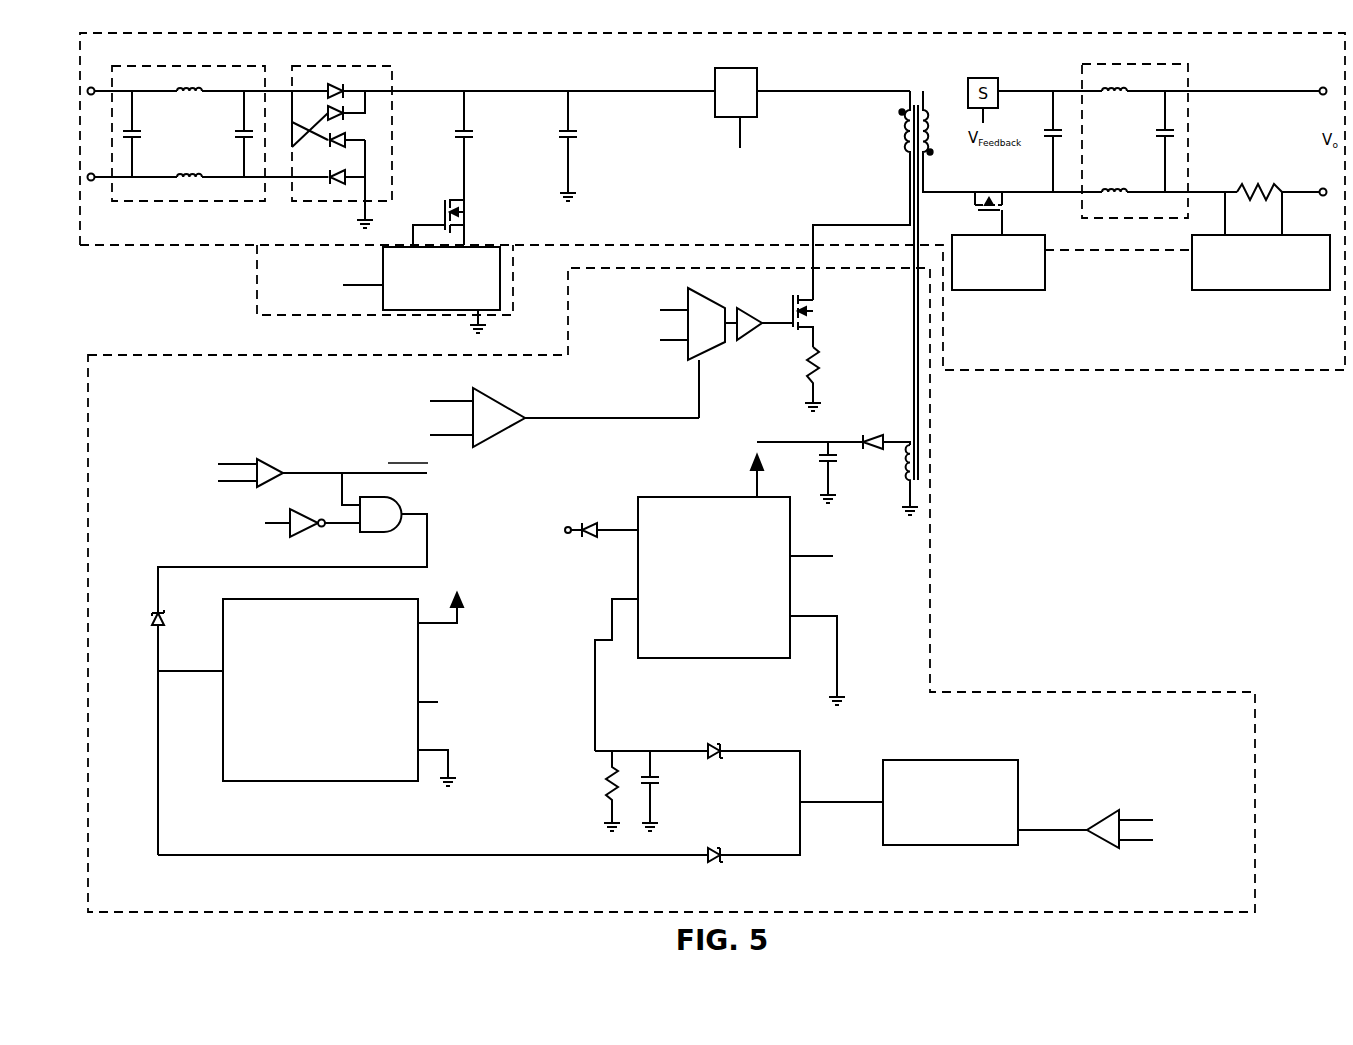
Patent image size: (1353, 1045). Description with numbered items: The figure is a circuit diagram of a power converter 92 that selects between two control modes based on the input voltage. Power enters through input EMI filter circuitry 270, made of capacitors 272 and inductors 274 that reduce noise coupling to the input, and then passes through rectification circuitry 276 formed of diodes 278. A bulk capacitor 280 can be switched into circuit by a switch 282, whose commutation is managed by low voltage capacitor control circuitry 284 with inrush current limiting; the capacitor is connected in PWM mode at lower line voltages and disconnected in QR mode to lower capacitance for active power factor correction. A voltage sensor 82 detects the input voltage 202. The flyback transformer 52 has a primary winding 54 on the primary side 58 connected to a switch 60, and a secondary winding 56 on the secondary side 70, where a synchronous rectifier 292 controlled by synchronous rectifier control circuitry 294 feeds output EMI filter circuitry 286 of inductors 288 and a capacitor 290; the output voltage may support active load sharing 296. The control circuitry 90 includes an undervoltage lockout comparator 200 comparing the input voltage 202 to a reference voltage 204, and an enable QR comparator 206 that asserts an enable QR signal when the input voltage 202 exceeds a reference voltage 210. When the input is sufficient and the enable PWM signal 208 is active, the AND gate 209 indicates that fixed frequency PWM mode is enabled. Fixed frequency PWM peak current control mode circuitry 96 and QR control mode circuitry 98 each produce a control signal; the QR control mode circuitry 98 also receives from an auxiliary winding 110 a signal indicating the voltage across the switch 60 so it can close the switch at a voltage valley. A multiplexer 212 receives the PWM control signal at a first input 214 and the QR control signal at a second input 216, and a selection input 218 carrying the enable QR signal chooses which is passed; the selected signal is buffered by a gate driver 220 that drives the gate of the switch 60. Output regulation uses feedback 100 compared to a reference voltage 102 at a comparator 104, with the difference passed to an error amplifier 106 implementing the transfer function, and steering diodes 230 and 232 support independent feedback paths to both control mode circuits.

The flyback transformer 52 is at (890, 266).
The primary winding 54 is at (905, 128).
The secondary winding 56 is at (927, 137).
The primary side 58 is at (870, 61).
The switch 60 is at (821, 311).
The secondary side 70 is at (1008, 60).
The voltage sensor 82 is at (712, 101).
The control circuitry 90 is at (862, 912).
The power converter 92 is at (1172, 372).
The fixed frequency PWM peak current control mode circuitry 96 is at (336, 784).
The QR control mode circuitry 98 is at (716, 661).
The feedback 100 is at (1140, 817).
The reference voltage 102 is at (1140, 845).
The comparator 104 is at (1114, 833).
The error amplifier 106 is at (937, 847).
The auxiliary winding 110 is at (905, 466).
The undervoltage lockout comparator 200 is at (299, 468).
The input voltage 202 is at (436, 396).
The reference voltage 204 is at (224, 484).
The enable QR comparator 206 is at (407, 417).
The enaPWM 208 is at (328, 530).
The AND gate 209 is at (408, 506).
The reference voltage 210 is at (460, 436).
The multiplexer 212 is at (664, 359).
The first input 214 is at (680, 302).
The second input 216 is at (682, 350).
The selection input 218 is at (702, 418).
The gate driver 220 is at (748, 338).
The steering diode 230 is at (708, 747).
The steering diode 232 is at (710, 862).
The input EMI filter circuitry 270 is at (215, 201).
The capacitors 272 is at (232, 132).
The inductors 274 is at (195, 98).
The rectification circuitry 276 is at (394, 82).
The diodes 278 is at (336, 193).
The bulk capacitor 280 is at (454, 140).
The switch 282 is at (466, 205).
The low voltage capacitor control circuitry 284 is at (505, 278).
The output EMI filter circuitry 286 is at (1195, 187).
The inductors 288 is at (1110, 93).
The capacitor 290 is at (1182, 132).
The synchronous rectifier 292 is at (990, 196).
The synchronous rectifier control circuitry 294 is at (1012, 292).
The active load sharing 296 is at (1304, 292).